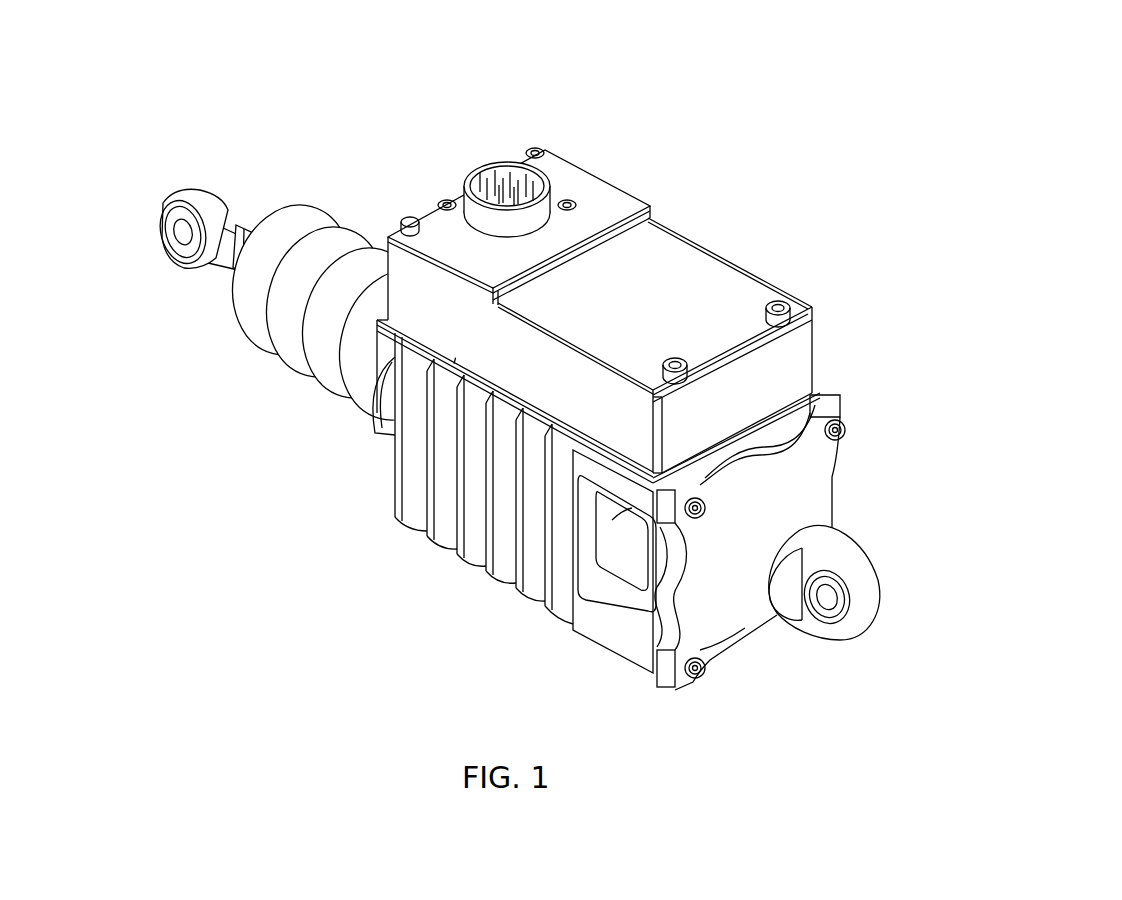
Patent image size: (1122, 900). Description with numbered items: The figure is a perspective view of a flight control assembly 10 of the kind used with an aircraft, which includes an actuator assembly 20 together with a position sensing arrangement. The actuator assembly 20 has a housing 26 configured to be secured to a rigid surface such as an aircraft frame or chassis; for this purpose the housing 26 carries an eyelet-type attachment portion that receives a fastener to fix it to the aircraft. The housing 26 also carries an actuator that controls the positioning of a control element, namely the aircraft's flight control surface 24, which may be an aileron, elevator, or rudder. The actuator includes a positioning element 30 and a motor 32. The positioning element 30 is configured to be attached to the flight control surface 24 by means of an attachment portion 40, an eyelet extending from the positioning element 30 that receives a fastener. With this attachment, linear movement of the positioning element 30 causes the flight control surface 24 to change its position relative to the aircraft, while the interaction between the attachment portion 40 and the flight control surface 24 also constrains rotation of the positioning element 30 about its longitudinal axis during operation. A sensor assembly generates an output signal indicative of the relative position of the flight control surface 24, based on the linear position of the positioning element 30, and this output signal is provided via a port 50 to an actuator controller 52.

The flight control assembly 10 is at (621, 65).
The actuator assembly 20 is at (676, 240).
The flight control surface 24 is at (162, 210).
The housing 26 is at (833, 481).
The positioning element 30 is at (241, 226).
The motor 32 is at (880, 587).
The attachment portion 40 is at (216, 193).
The port 50 is at (472, 168).
The actuator controller 52 is at (666, 127).